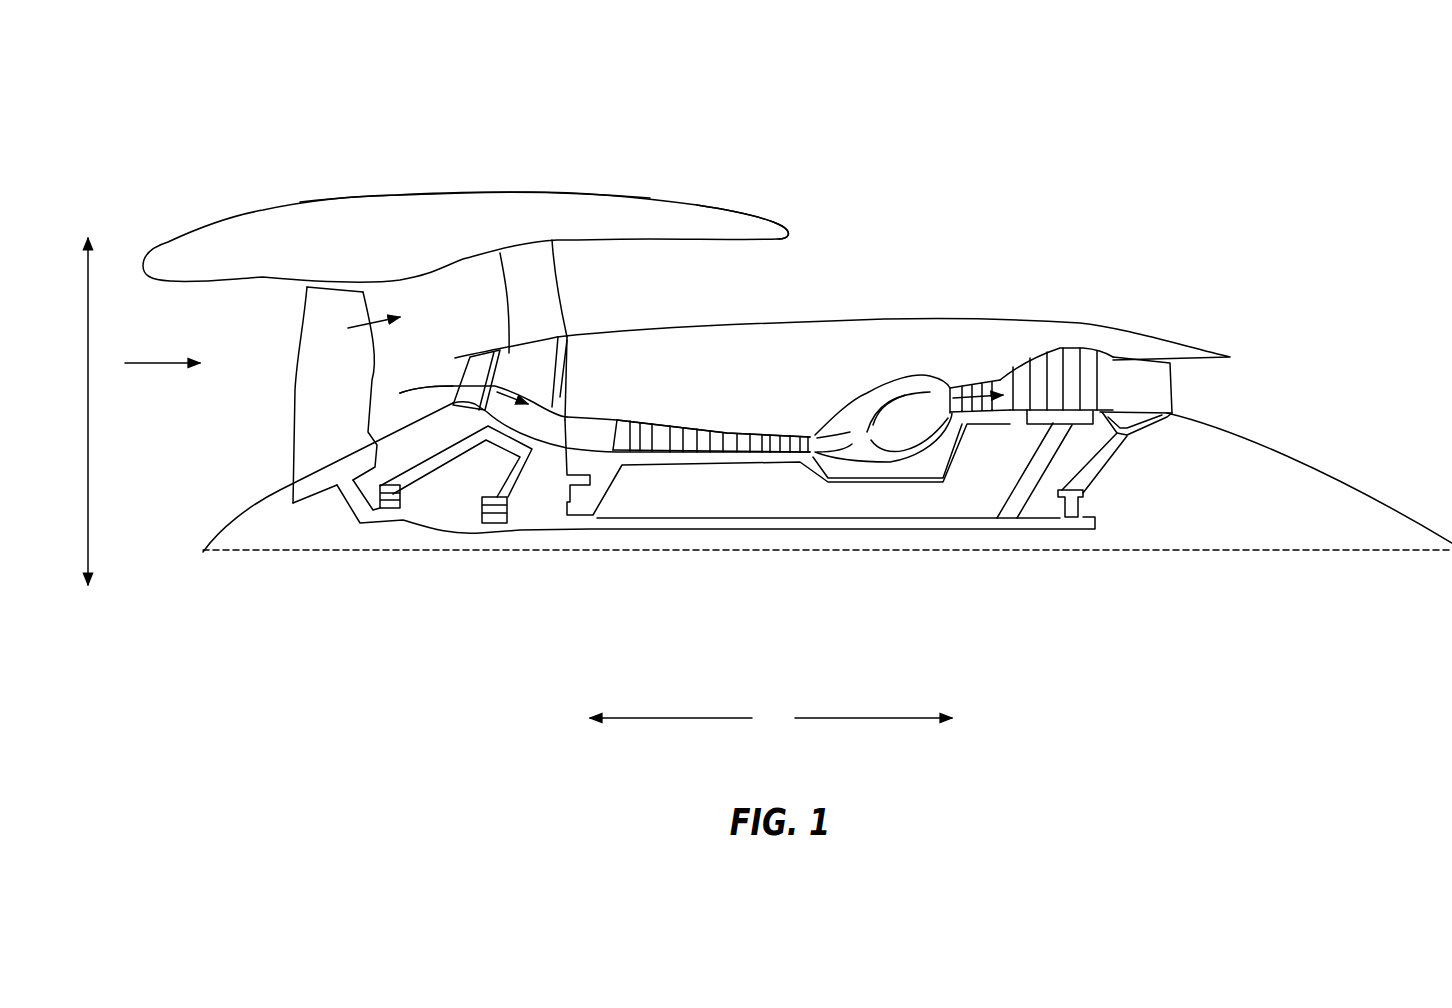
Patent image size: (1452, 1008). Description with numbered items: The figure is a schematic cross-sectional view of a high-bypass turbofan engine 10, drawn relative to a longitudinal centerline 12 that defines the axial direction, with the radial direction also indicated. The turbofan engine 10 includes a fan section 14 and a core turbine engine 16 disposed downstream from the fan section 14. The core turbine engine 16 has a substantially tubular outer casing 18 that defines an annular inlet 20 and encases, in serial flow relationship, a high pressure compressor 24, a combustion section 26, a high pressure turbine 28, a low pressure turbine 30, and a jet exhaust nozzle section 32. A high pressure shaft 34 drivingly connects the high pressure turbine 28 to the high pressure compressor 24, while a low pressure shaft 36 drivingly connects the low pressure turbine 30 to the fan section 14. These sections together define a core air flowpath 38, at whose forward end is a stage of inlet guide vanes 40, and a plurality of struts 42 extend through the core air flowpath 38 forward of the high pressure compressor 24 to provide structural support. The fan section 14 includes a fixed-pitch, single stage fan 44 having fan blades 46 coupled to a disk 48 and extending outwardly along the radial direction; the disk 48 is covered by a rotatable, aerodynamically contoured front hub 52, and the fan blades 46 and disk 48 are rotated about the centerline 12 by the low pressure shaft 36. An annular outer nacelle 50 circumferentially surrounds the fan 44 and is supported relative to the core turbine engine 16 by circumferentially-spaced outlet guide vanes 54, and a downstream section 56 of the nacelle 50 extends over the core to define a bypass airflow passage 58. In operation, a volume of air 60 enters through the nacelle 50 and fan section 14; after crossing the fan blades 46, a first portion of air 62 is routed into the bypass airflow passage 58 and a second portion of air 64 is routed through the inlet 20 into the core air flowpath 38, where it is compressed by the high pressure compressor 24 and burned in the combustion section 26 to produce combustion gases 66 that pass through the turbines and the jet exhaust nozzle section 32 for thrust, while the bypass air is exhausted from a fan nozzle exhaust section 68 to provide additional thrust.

The turbofan engine 10 is at (928, 150).
The longitudinal centerline 12 is at (1350, 548).
The fan section 14 is at (365, 232).
The core turbine engine 16 is at (840, 300).
The outer casing 18 is at (938, 316).
The annular inlet 20 is at (455, 358).
The high pressure compressor 24 is at (726, 416).
The combustion section 26 is at (897, 377).
The high pressure turbine 28 is at (993, 350).
The low pressure turbine 30 is at (1084, 336).
The jet exhaust nozzle section 32 is at (1152, 368).
The high pressure shaft 34 is at (883, 478).
The low pressure shaft 36 is at (977, 522).
The core air flowpath 38 is at (600, 416).
The inlet guide vanes 40 is at (482, 372).
The struts 42 is at (570, 360).
The fan 44 is at (282, 333).
The fan blades 46 is at (293, 410).
The disk 48 is at (318, 490).
The outer nacelle 50 is at (467, 213).
The front hub 52 is at (250, 505).
The outlet guide vanes 54 is at (545, 266).
The downstream section of the nacelle 56 is at (741, 203).
The bypass airflow passage 58 is at (671, 300).
The volume of air 60 is at (145, 360).
The first portion of air 62 is at (377, 320).
The second portion of air 64 is at (440, 388).
The combustion gases 66 is at (973, 385).
The fan nozzle exhaust section 68 is at (772, 266).